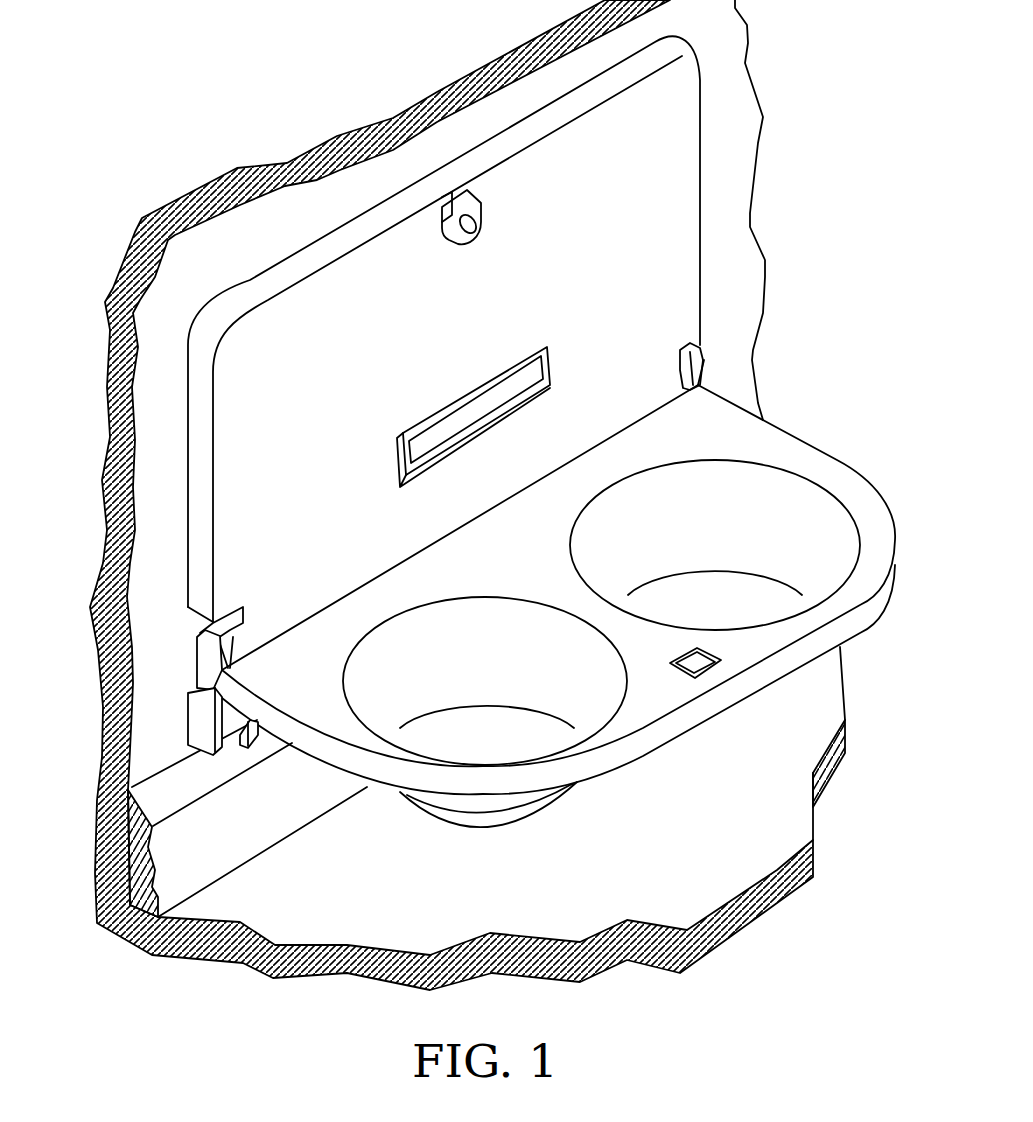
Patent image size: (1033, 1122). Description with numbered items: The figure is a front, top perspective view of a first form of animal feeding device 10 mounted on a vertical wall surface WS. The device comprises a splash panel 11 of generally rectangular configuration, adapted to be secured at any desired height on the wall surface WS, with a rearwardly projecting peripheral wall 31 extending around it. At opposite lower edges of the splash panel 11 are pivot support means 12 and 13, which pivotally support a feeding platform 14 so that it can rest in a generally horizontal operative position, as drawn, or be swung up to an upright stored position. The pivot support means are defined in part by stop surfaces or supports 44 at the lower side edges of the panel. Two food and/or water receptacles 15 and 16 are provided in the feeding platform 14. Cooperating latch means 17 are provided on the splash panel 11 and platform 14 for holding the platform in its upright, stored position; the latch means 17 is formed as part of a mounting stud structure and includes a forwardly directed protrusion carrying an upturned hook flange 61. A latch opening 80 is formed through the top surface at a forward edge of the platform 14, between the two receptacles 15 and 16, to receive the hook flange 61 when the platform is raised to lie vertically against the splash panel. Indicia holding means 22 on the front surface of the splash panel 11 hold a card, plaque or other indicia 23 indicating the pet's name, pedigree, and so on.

The animal feeding device 10 is at (284, 1003).
The splash panel 11 is at (257, 300).
The pivot support means 12 is at (243, 638).
The pivot support means 13 is at (675, 380).
The feeding platform 14 is at (652, 765).
The food and/or water receptacle 15 is at (457, 620).
The food and/or water receptacle 16 is at (752, 483).
The latch means 17 is at (498, 208).
The indicia holding means 22 is at (455, 400).
The indicia 23 is at (413, 465).
The peripheral wall 31 is at (197, 405).
The stop surface 44 is at (217, 728).
The hook flange 61 is at (478, 213).
The latch opening 80 is at (703, 665).
The wall surface WS is at (157, 453).